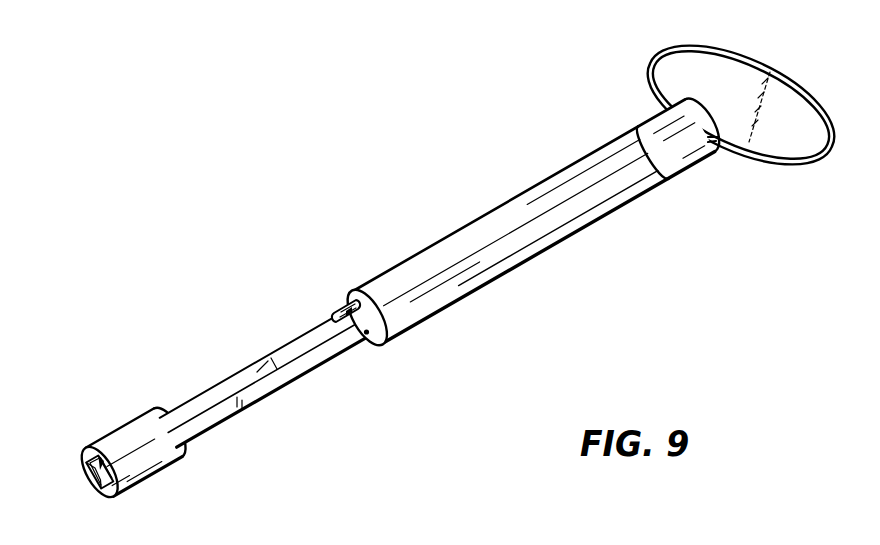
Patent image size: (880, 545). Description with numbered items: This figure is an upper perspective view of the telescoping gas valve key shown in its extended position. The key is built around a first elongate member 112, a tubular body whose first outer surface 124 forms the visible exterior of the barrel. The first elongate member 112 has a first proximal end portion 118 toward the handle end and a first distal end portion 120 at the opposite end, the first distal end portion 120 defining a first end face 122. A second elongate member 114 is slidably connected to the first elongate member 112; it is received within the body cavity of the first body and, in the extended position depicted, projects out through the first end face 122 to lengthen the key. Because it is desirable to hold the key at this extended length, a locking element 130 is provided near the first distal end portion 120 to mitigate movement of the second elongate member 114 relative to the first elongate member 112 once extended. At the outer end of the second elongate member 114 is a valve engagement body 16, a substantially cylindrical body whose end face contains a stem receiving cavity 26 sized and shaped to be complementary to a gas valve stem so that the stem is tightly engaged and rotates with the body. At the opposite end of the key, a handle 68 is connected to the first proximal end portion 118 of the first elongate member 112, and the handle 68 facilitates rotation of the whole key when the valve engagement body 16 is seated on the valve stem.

The valve engagement body 16 is at (117, 443).
The stem receiving cavity 26 is at (91, 479).
The handle 68 is at (786, 107).
The first elongate member 112 is at (510, 230).
The second elongate member 114 is at (273, 407).
The first proximal end portion 118 is at (623, 154).
The first distal end portion 120 is at (384, 288).
The first end face 122 is at (369, 348).
The first outer surface 124 is at (447, 283).
The locking element 130 is at (340, 301).